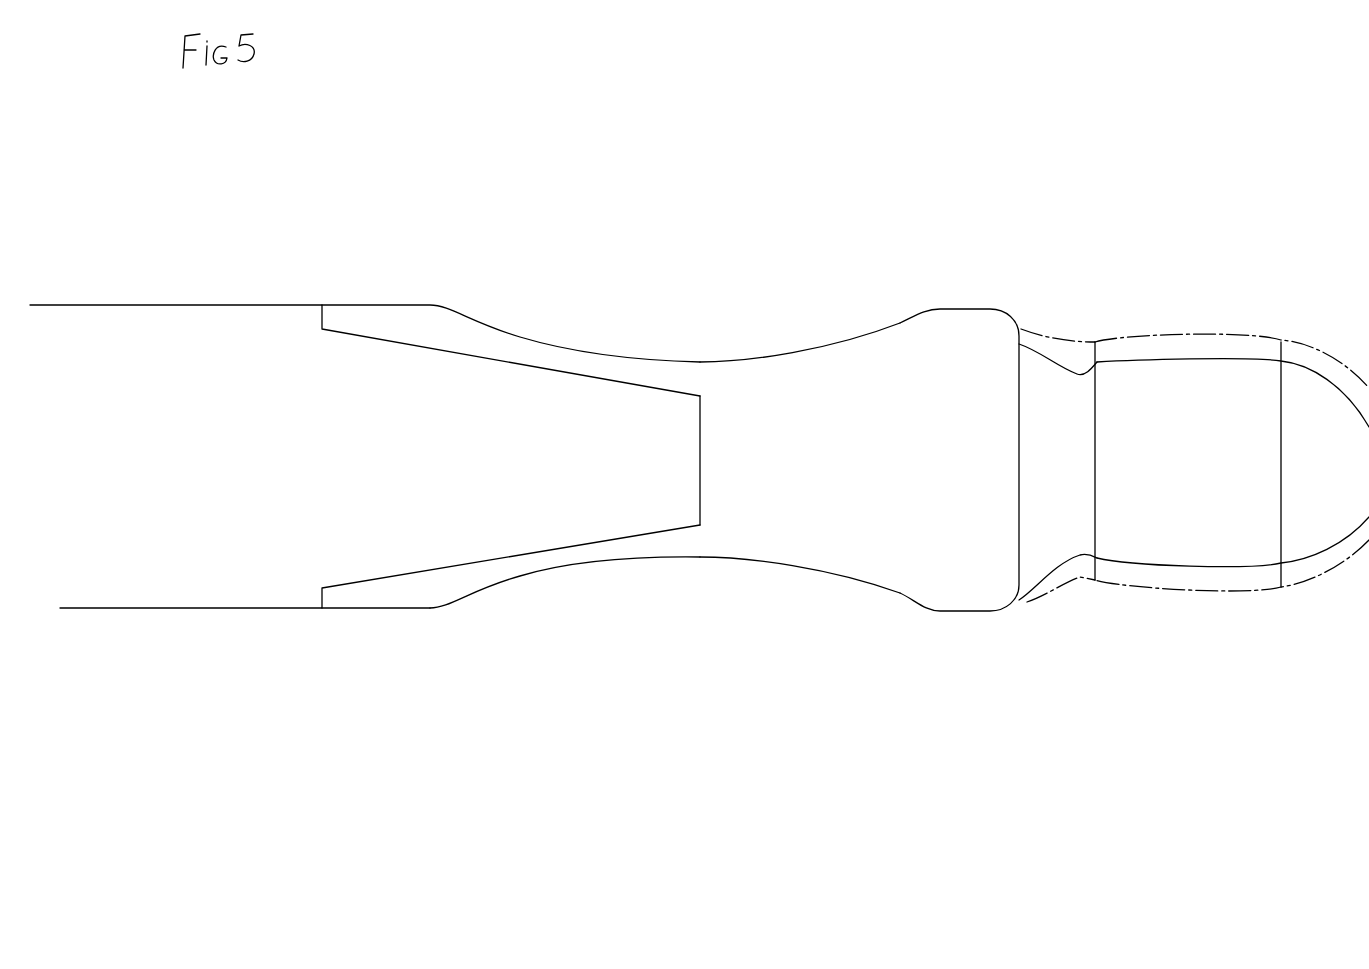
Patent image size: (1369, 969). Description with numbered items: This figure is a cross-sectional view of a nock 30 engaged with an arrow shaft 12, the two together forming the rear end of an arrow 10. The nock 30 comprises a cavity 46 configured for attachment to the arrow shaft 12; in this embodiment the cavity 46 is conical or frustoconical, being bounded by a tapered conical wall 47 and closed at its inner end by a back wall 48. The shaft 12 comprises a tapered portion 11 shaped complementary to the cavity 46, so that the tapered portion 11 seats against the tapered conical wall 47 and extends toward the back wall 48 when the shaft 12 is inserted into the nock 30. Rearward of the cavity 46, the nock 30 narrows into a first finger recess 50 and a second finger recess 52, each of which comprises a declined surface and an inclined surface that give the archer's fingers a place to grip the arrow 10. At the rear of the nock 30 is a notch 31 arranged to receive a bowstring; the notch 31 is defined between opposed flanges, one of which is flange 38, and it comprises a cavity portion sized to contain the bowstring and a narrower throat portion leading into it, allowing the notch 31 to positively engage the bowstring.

The arrow 10 is at (406, 809).
The tapered portion 11 is at (425, 363).
The arrow shaft 12 is at (225, 558).
The nock 30 is at (810, 455).
The notch 31 is at (1077, 370).
The flange 38 is at (1257, 546).
The cavity 46 is at (511, 639).
The tapered conical wall 47 is at (477, 553).
The back wall 48 is at (693, 441).
The first finger recess 50 is at (736, 360).
The second finger recess 52 is at (712, 563).